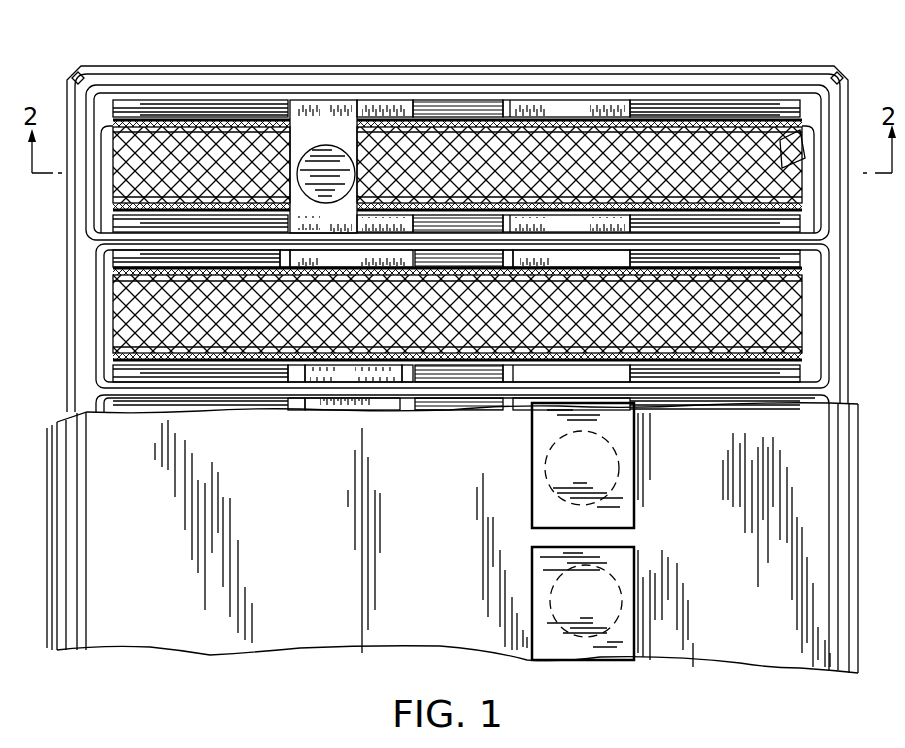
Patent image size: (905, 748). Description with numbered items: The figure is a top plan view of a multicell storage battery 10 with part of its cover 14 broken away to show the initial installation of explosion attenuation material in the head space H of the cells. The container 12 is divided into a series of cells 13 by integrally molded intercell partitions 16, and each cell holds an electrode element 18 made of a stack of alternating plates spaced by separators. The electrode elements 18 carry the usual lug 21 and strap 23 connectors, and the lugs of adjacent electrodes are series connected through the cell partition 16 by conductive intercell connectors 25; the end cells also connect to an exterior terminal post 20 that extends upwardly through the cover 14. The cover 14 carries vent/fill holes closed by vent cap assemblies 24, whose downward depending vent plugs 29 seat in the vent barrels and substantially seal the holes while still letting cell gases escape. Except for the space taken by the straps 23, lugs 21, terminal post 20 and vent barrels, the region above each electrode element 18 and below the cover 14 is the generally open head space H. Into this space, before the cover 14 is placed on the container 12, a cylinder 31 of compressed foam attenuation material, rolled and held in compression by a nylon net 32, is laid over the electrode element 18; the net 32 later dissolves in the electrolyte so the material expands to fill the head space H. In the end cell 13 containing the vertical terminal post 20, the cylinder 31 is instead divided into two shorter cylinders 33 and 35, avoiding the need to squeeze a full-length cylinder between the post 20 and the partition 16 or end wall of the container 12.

The storage battery 10 is at (142, 600).
The container 12 is at (718, 64).
The cell 13 is at (105, 100).
The cover 14 is at (296, 554).
The intercell partition 16 is at (155, 412).
The electrode element 18 is at (482, 92).
The terminal post 20 is at (320, 146).
The lug 21 is at (317, 400).
The strap 23 is at (343, 114).
The vent cap assembly 24 is at (625, 550).
The intercell connector 25 is at (353, 388).
The vent plug 29 is at (660, 427).
The cylinder of compressed composite material 31 is at (471, 370).
The net 32 is at (673, 117).
The shorter cylinder 33 is at (437, 115).
The shorter cylinder 35 is at (190, 112).
The head space H is at (771, 152).